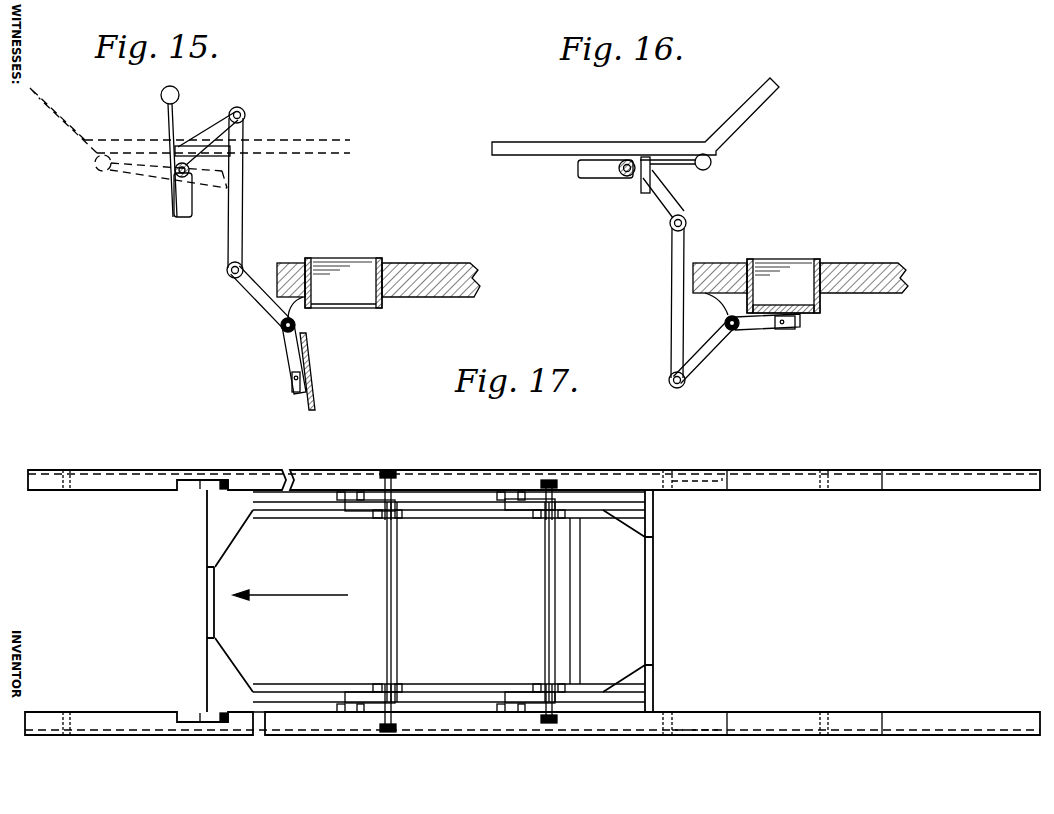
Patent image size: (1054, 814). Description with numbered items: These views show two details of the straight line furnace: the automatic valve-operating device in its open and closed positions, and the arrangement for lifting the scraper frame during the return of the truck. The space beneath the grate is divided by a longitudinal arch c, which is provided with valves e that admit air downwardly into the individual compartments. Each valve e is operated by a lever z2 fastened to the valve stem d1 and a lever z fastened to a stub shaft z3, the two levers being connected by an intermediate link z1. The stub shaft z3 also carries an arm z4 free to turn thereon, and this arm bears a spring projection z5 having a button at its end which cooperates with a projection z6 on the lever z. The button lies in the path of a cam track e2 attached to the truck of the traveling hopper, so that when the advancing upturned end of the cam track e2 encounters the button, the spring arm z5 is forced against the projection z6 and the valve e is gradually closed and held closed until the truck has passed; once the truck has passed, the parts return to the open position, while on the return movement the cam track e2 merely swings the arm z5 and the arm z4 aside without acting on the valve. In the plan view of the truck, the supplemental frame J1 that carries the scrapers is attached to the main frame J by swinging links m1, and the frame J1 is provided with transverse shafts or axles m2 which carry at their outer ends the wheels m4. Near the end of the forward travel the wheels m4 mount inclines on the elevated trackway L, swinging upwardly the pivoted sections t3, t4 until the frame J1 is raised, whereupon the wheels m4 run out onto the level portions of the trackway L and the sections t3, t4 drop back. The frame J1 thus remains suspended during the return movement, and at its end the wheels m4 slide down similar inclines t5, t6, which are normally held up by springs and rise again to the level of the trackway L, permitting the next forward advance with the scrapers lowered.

In FIG. 15, the lever z is at (208, 138).
In FIG. 16, the lever z is at (662, 200).
In FIG. 15, the intermediate link z1 is at (228, 223).
In FIG. 16, the intermediate link z1 is at (671, 300).
In FIG. 15, the lever z2 is at (265, 298).
In FIG. 16, the lever z2 is at (712, 348).
In FIG. 15, the stub shaft z3 is at (178, 174).
In FIG. 16, the stub shaft z3 is at (622, 176).
In FIG. 15, the arm z4 is at (180, 219).
In FIG. 16, the arm z4 is at (592, 170).
In FIG. 15, the spring projection z5 is at (168, 113).
In FIG. 16, the spring projection z5 is at (697, 170).
In FIG. 15, the projection z6 is at (183, 146).
In FIG. 16, the projection z6 is at (652, 176).
In FIG. 15, the valve e is at (310, 366).
In FIG. 16, the valve e is at (783, 300).
In FIG. 15, the cam track e2 is at (190, 138).
In FIG. 16, the cam track e2 is at (635, 116).
In FIG. 15, the longitudinal arch c is at (427, 268).
In FIG. 16, the longitudinal arch c is at (865, 268).
In FIG. 15, the valve stem d1 is at (297, 325).
In FIG. 16, the valve stem d1 is at (726, 323).
In FIG. 17, the elevated trackway L is at (466, 472).
In FIG. 17, the pivoted track section t3 is at (692, 470).
In FIG. 17, the pivoted track section t4 is at (855, 470).
In FIG. 17, the incline t5 is at (56, 472).
In FIG. 17, the incline t6 is at (198, 486).
In FIG. 17, the main frame J is at (210, 542).
In FIG. 17, the supplemental frame J1 is at (580, 584).
In FIG. 17, the swinging link m1 is at (362, 512).
In FIG. 17, the transverse shaft m2 is at (386, 607).
In FIG. 17, the wheel m4 is at (396, 463).